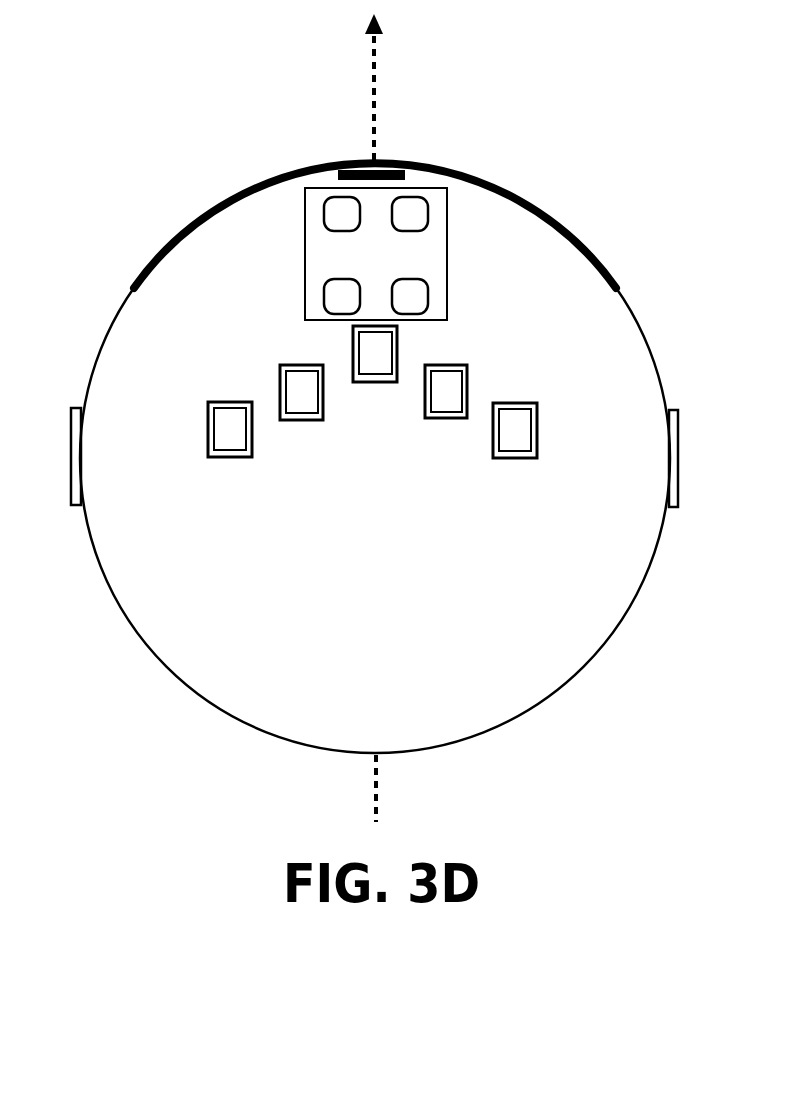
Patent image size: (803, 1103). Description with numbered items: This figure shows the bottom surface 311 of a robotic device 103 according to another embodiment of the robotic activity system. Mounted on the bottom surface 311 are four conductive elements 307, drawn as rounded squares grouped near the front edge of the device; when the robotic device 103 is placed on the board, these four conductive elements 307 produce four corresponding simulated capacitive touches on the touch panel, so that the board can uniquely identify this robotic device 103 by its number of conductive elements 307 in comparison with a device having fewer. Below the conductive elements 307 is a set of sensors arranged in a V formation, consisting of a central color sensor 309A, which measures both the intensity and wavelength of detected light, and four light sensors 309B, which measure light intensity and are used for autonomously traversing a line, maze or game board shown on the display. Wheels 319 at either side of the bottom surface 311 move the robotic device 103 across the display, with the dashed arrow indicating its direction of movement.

The robotic device 103 is at (640, 325).
The bottom surface 311 is at (108, 363).
The wheels 319 is at (72, 456).
The conductive elements 307 is at (324, 216).
The color sensor 309A is at (375, 376).
The light sensors 309B is at (303, 413).